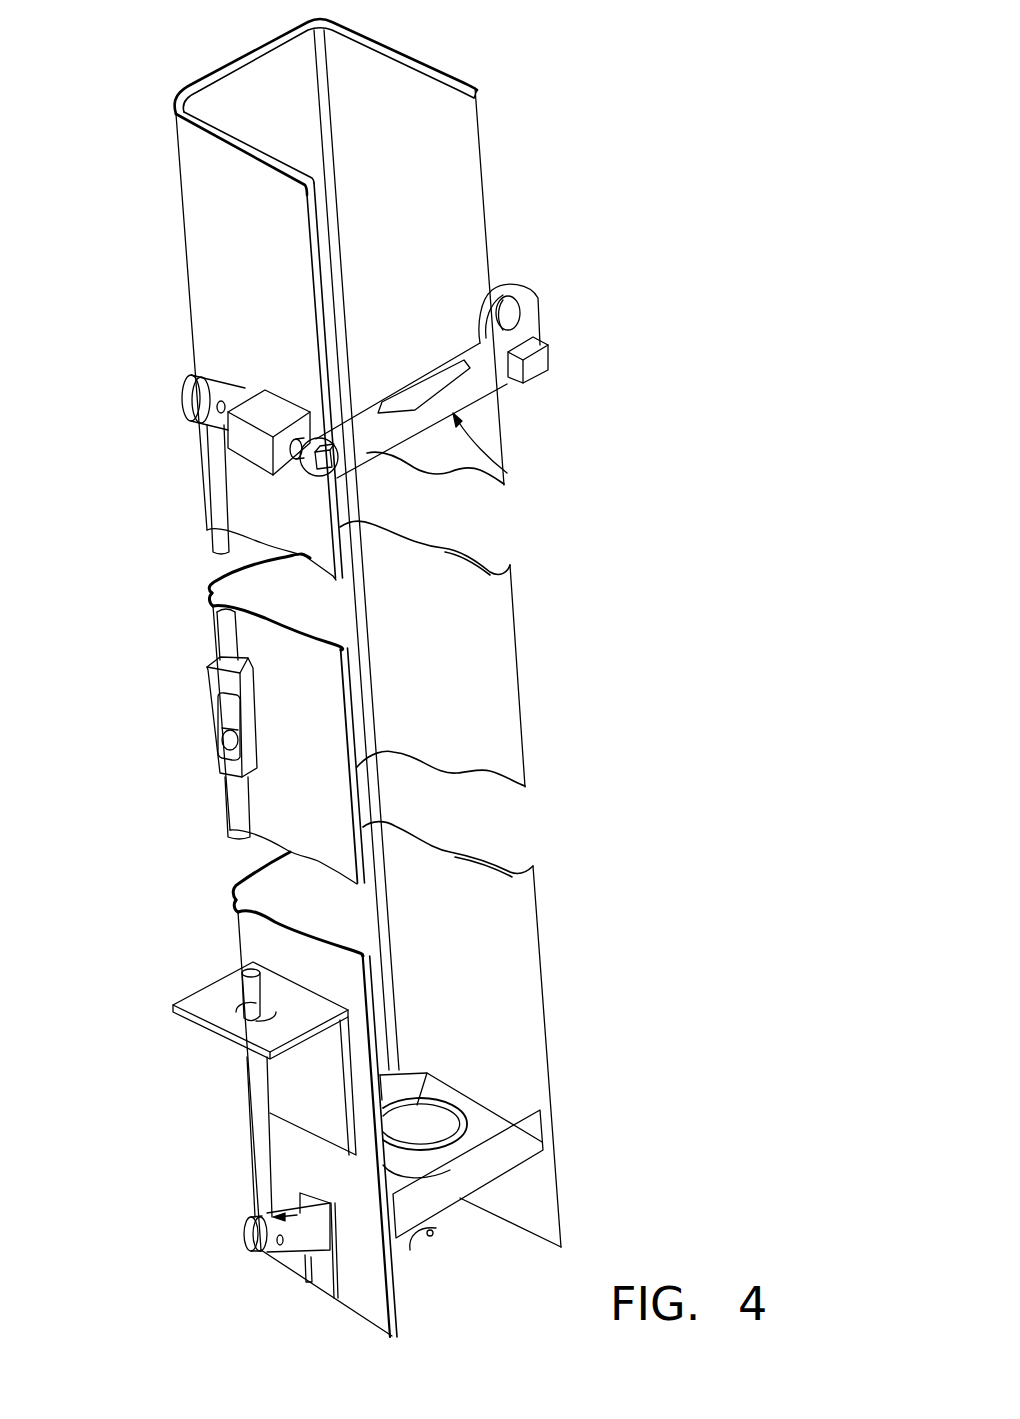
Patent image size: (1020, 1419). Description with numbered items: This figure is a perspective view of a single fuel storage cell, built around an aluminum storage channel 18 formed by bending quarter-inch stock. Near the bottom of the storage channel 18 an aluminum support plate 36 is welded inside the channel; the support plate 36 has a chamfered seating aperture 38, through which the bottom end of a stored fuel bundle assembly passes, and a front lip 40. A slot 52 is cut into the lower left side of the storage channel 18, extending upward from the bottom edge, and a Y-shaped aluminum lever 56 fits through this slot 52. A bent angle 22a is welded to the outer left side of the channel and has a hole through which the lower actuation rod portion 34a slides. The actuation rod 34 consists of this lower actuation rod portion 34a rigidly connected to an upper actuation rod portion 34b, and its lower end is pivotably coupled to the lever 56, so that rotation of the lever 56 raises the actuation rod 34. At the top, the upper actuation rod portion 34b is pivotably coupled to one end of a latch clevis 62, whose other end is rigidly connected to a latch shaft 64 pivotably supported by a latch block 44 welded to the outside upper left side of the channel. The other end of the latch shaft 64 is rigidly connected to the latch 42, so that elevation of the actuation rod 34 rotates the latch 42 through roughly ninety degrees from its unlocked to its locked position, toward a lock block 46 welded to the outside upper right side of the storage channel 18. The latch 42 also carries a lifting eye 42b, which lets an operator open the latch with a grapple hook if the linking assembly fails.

The storage channel 18 is at (498, 678).
The bent angle 22a is at (207, 1005).
The actuation rod 34 is at (192, 640).
The lower actuation rod portion 34a is at (235, 798).
The upper actuation rod portion 34b is at (215, 475).
The support plate 36 is at (448, 1210).
The seating aperture 38 is at (430, 1097).
The front lip 40 is at (538, 1132).
The latch 42 is at (506, 470).
The lifting eye 42b is at (530, 293).
The latch block 44 is at (257, 403).
The lock block 46 is at (538, 377).
The slot 52 is at (268, 1300).
The lever 56 is at (320, 1242).
The latch clevis 62 is at (192, 380).
The latch shaft 64 is at (293, 463).